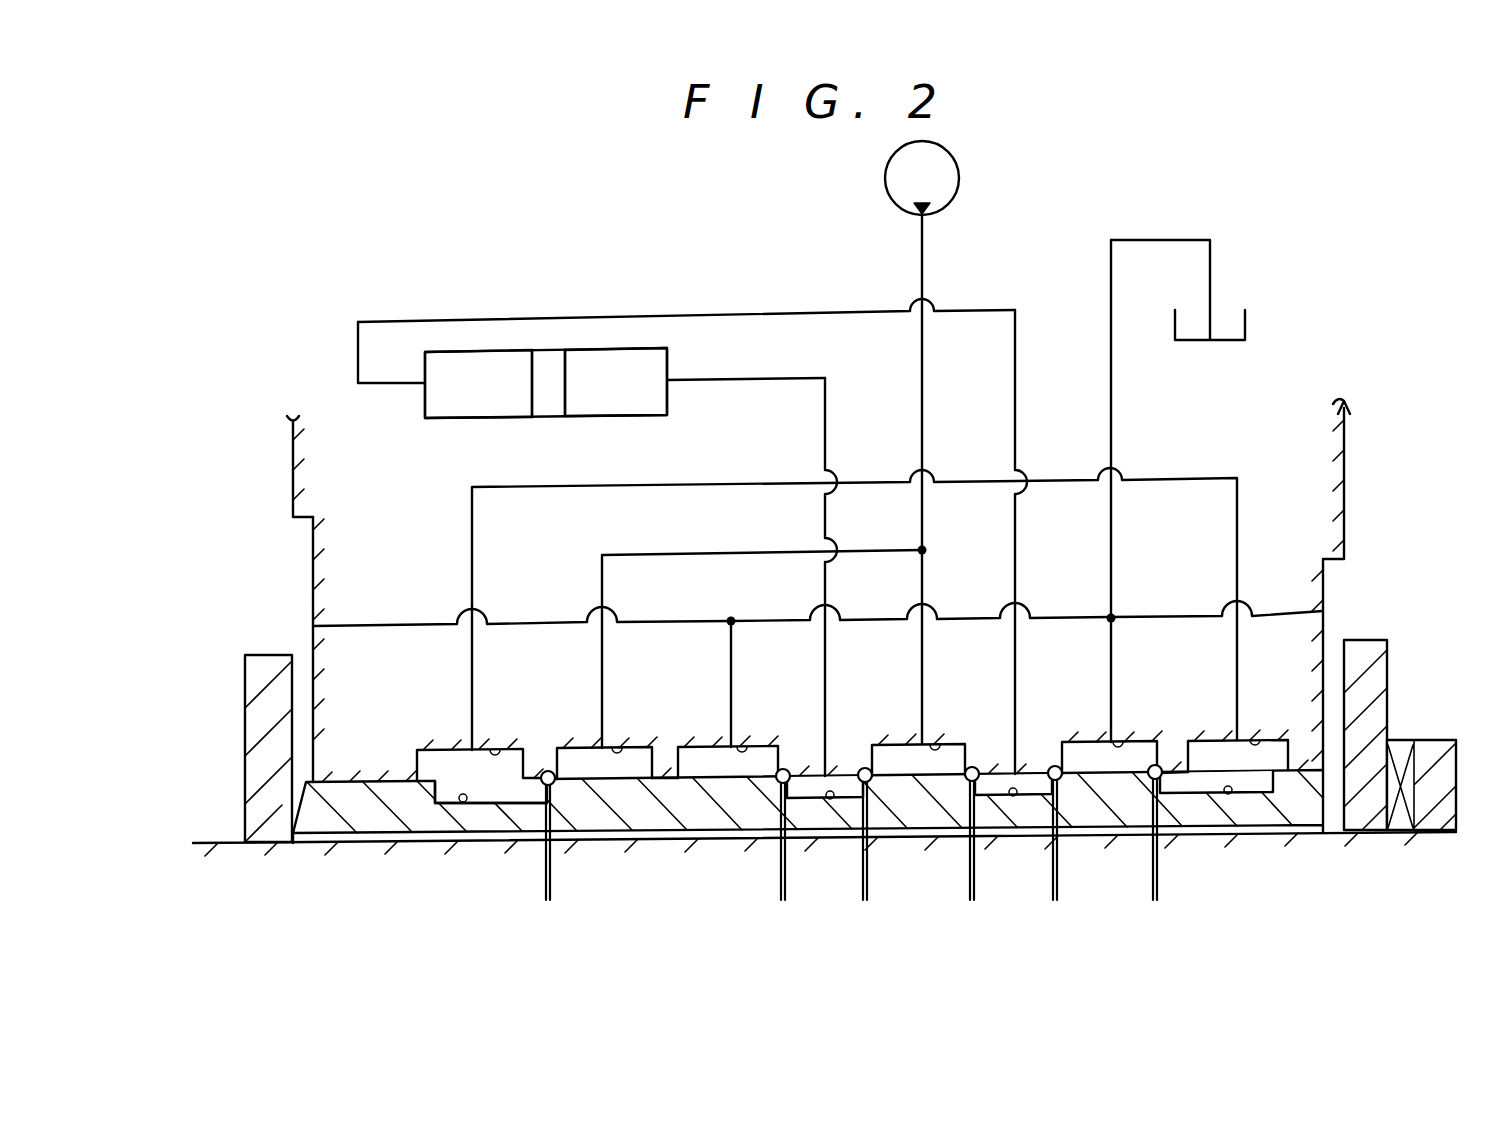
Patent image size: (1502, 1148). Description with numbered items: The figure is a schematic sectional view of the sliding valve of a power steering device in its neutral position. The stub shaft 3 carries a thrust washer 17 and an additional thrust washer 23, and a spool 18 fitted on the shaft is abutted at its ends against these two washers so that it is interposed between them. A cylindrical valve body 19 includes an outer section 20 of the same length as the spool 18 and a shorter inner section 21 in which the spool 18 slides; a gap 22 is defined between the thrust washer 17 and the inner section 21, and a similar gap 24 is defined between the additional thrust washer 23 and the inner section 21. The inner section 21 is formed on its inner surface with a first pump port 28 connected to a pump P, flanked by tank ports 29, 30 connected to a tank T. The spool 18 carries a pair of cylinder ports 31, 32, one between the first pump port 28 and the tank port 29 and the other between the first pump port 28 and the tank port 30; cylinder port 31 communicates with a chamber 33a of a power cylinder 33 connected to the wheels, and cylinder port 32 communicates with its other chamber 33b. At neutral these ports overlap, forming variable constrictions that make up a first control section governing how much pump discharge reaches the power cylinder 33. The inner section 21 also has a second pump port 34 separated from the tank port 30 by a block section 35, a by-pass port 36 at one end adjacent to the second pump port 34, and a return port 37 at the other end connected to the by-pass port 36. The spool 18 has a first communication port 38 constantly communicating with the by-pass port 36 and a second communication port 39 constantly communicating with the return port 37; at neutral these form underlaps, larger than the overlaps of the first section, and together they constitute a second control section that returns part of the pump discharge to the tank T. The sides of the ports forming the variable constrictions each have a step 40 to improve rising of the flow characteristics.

The stub shaft 3 is at (1370, 838).
The thrust washer 17 is at (1379, 656).
The spool 18 is at (662, 822).
The valve body 19 is at (222, 453).
The outer section 20 is at (313, 458).
The inner section 21 is at (332, 553).
The gap 22 is at (1333, 672).
The additional thrust washer 23 is at (258, 662).
The gap 24 is at (305, 662).
The first pump port 28 is at (935, 743).
The tank port 29 is at (1118, 740).
The tank port 30 is at (742, 745).
The cylinder port 31 is at (1013, 796).
The cylinder port 32 is at (830, 799).
The power cylinder 33 is at (546, 332).
The chamber 33a is at (477, 360).
The chamber 33b is at (615, 365).
The second pump port 34 is at (617, 746).
The block section 35 is at (664, 770).
The by-pass port 36 is at (495, 748).
The return port 37 is at (1255, 738).
The first communication port 38 is at (462, 802).
The second communication port 39 is at (1228, 794).
The step 40 is at (1160, 782).
The pump P is at (960, 178).
The tank T is at (1245, 327).